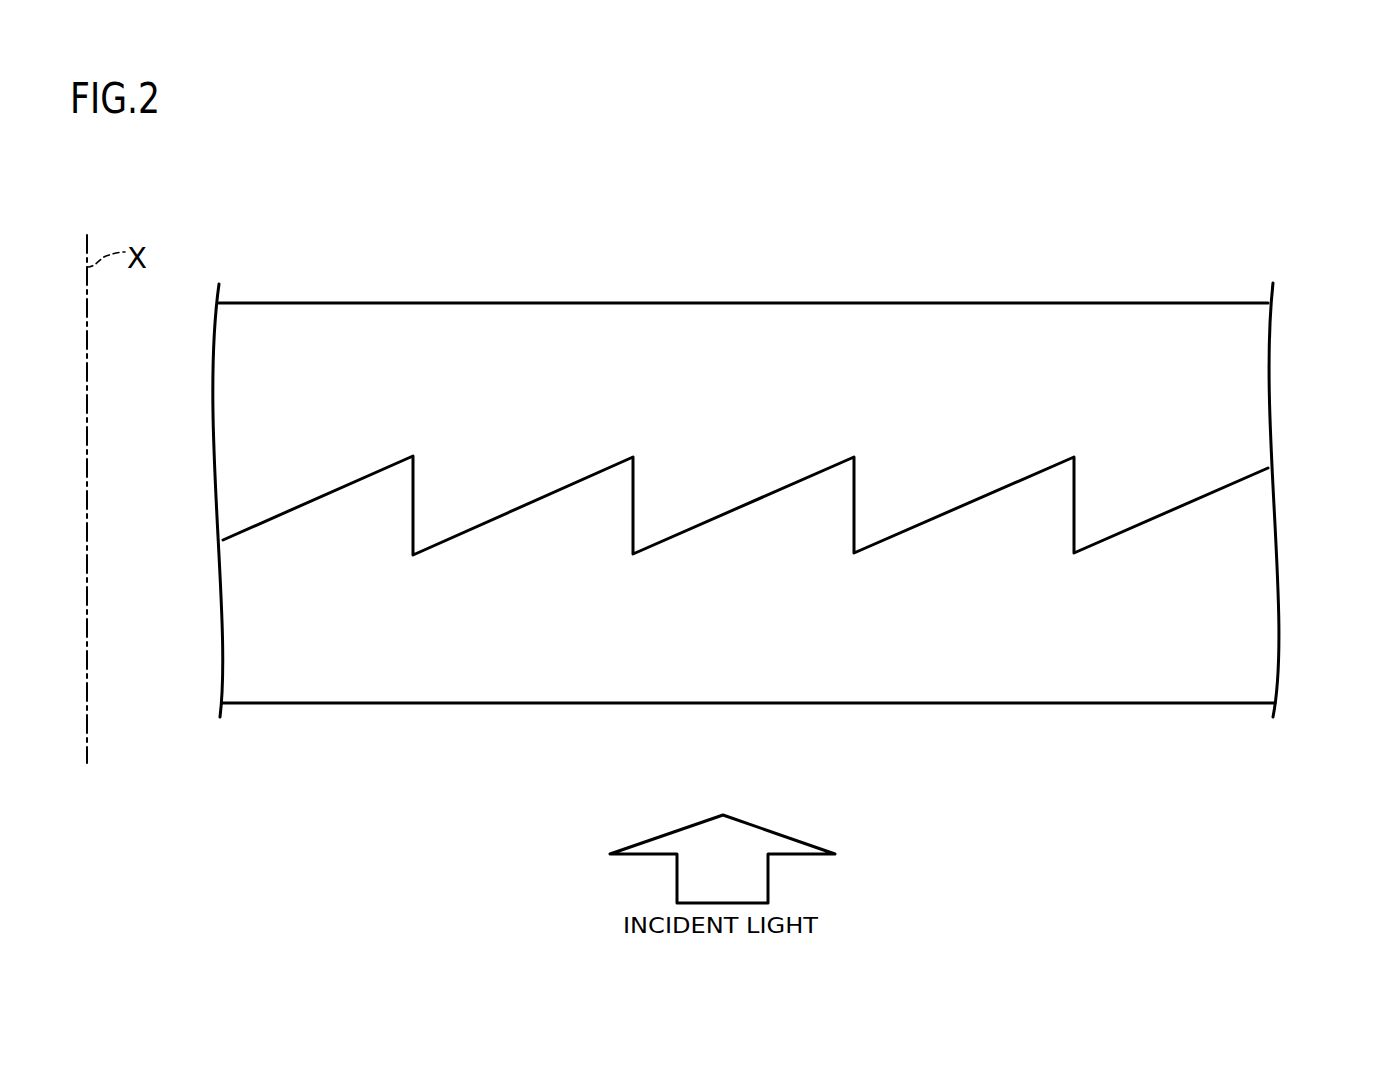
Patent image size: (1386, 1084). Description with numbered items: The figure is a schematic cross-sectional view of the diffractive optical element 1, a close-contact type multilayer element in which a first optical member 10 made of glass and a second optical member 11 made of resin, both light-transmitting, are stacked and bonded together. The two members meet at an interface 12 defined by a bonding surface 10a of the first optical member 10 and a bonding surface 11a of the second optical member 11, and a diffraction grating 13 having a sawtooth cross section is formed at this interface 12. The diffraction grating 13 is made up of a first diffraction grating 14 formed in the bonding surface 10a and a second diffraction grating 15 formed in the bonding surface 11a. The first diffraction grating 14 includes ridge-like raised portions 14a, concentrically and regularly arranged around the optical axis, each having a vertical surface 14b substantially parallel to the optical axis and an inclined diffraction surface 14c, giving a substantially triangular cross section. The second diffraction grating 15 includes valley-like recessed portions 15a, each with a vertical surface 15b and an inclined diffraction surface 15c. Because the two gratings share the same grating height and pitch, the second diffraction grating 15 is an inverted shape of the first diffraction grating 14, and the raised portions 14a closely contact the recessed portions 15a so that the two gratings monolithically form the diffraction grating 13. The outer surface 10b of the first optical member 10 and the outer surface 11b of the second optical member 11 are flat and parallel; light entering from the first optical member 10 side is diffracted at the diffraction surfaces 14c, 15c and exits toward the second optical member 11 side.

The diffractive optical element 1 is at (743, 456).
The first optical member 10 is at (708, 539).
The bonding surface of the first optical member 10a is at (303, 503).
The surface of the first optical member 10b is at (428, 703).
The second optical member 11 is at (703, 466).
The bonding surface of the second optical member 11a is at (281, 517).
The surface of the second optical member 11b is at (423, 303).
The interface 12 is at (1201, 497).
The diffraction grating 13 is at (1082, 498).
The first diffraction grating 14 is at (985, 253).
The raised portion 14a is at (757, 496).
The vertical surface 14b is at (637, 528).
The diffraction surface 14c is at (510, 511).
The second diffraction grating 15 is at (963, 760).
The recessed portion 15a is at (723, 517).
The vertical surface 15b is at (1072, 523).
The diffraction surface 15c is at (953, 515).